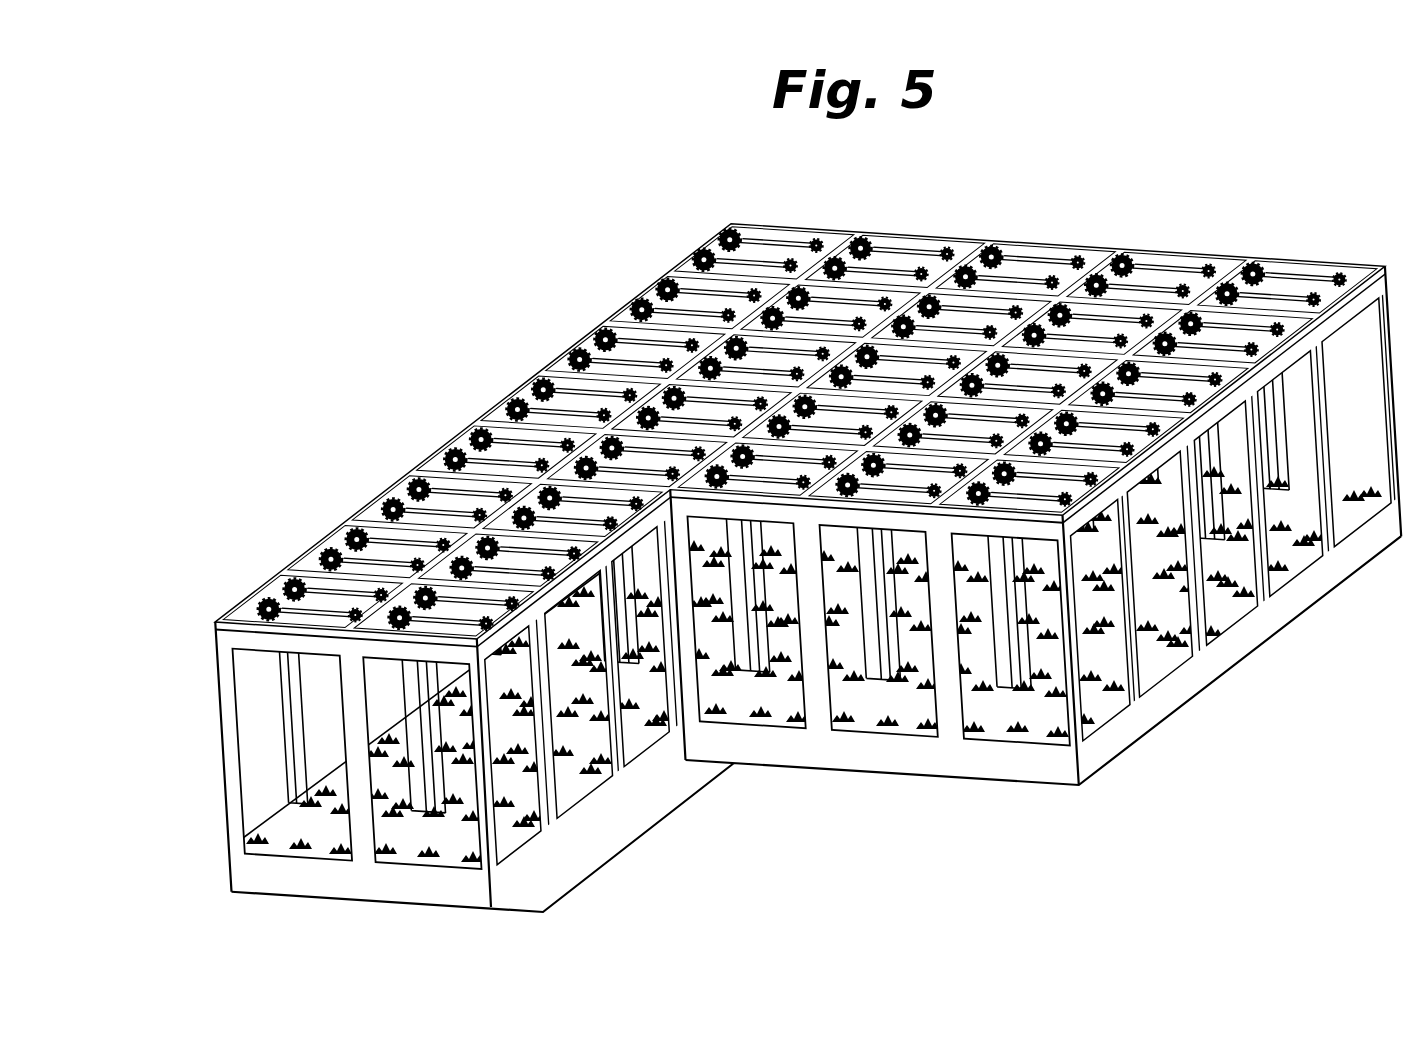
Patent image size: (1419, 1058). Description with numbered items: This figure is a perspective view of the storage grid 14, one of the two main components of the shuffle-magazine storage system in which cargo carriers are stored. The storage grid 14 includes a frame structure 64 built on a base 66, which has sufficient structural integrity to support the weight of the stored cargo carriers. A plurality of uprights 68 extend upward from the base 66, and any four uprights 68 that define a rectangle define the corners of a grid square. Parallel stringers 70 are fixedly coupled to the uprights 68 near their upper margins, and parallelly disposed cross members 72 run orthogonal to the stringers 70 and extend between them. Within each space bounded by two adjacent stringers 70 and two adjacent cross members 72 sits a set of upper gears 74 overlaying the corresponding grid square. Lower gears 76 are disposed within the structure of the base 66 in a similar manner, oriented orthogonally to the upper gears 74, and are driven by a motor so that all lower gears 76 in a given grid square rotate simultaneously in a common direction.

The storage grid 14 is at (527, 250).
The frame structure 64 is at (328, 534).
The base 66 is at (229, 860).
The uprights 68 is at (287, 710).
The stringers 70 is at (399, 478).
The cross members 72 is at (483, 432).
The upper gears 74 is at (266, 605).
The lower gears 76 is at (249, 835).